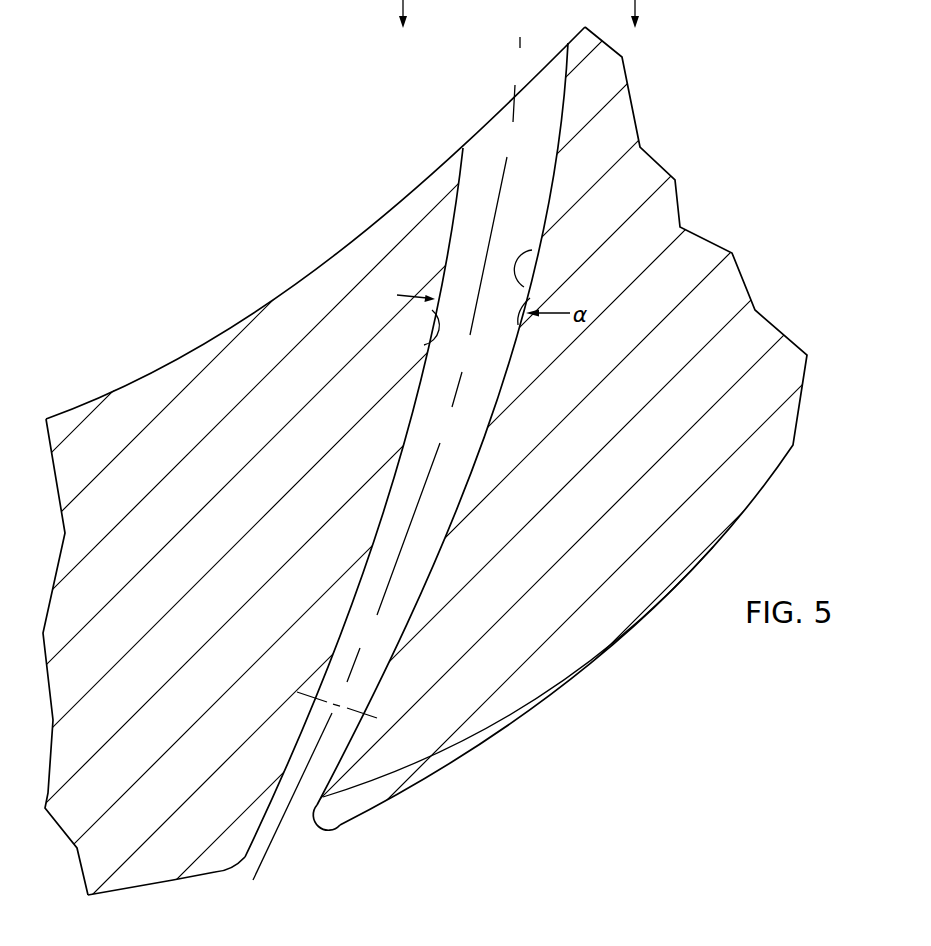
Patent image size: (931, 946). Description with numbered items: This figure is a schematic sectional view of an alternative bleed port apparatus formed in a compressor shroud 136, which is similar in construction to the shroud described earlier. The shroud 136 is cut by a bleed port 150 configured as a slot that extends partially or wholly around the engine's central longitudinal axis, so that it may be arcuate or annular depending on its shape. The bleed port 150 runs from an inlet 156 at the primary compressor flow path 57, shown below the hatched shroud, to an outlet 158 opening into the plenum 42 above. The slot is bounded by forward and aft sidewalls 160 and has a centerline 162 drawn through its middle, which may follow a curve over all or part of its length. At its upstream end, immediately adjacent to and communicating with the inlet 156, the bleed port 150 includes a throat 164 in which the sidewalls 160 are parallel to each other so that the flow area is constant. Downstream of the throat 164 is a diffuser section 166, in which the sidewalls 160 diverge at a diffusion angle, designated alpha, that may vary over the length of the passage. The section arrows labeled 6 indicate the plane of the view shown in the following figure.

The section line for FIG. 6 is at (519, 16).
The plenum 42 is at (336, 104).
The primary compressor flow path 57 is at (358, 882).
The shroud 136 is at (150, 875).
The bleed port 150 is at (438, 234).
The inlet 156 is at (247, 863).
The outlet 158 is at (475, 132).
The sidewalls 160 is at (424, 345).
The centerline 162 is at (437, 453).
The throat 164 is at (335, 771).
The diffuser section 166 is at (441, 546).